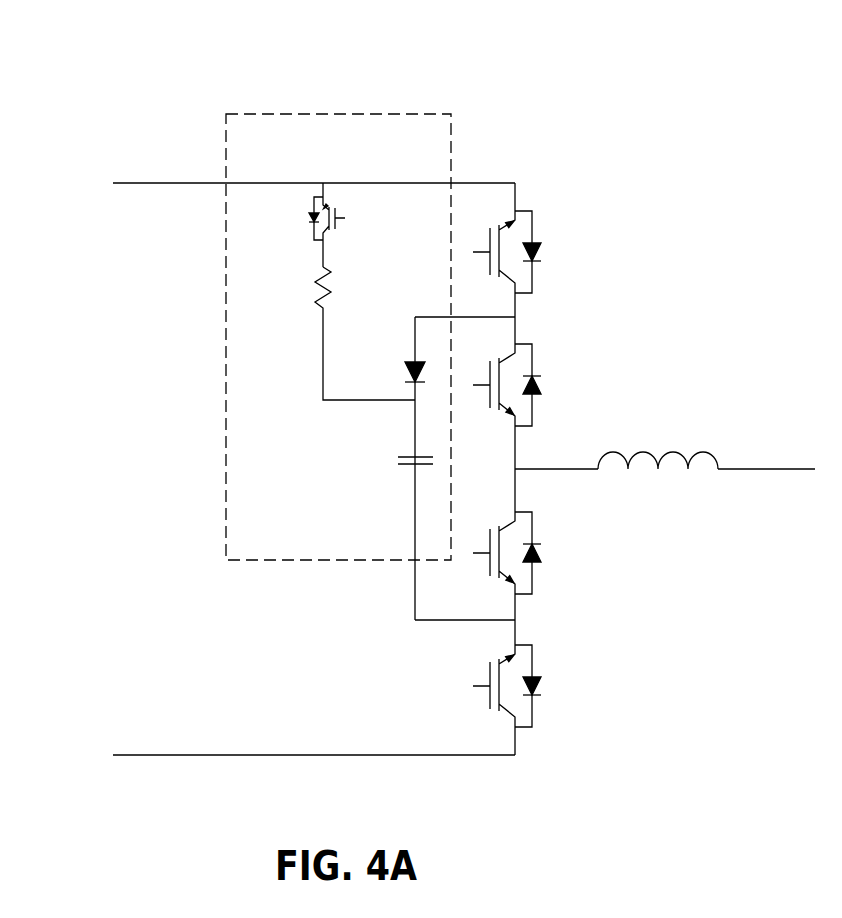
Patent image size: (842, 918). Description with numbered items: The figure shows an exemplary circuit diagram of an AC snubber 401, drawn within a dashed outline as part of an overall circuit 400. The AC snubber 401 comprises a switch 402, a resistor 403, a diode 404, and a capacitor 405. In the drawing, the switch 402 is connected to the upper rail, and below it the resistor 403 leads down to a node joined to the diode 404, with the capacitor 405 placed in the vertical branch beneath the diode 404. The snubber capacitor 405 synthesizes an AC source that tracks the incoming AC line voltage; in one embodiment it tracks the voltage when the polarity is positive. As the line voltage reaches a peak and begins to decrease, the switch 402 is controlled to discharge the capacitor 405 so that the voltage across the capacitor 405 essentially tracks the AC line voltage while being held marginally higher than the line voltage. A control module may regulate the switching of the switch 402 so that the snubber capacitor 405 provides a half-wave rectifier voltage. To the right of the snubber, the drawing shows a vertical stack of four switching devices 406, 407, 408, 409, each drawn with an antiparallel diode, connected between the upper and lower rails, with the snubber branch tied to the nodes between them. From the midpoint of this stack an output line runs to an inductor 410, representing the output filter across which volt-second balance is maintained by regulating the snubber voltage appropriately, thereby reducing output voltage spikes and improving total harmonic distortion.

The power converter circuit 400 is at (176, 93).
The AC snubber 401 is at (338, 337).
The switch 402 is at (318, 218).
The resistor 403 is at (320, 278).
The diode 404 is at (406, 372).
The capacitor 405 is at (398, 462).
The IGBT switch 406 is at (533, 222).
The IGBT switch 407 is at (533, 355).
The IGBT switch 408 is at (533, 522).
The IGBT switch 409 is at (533, 655).
The inductor 410 is at (674, 452).